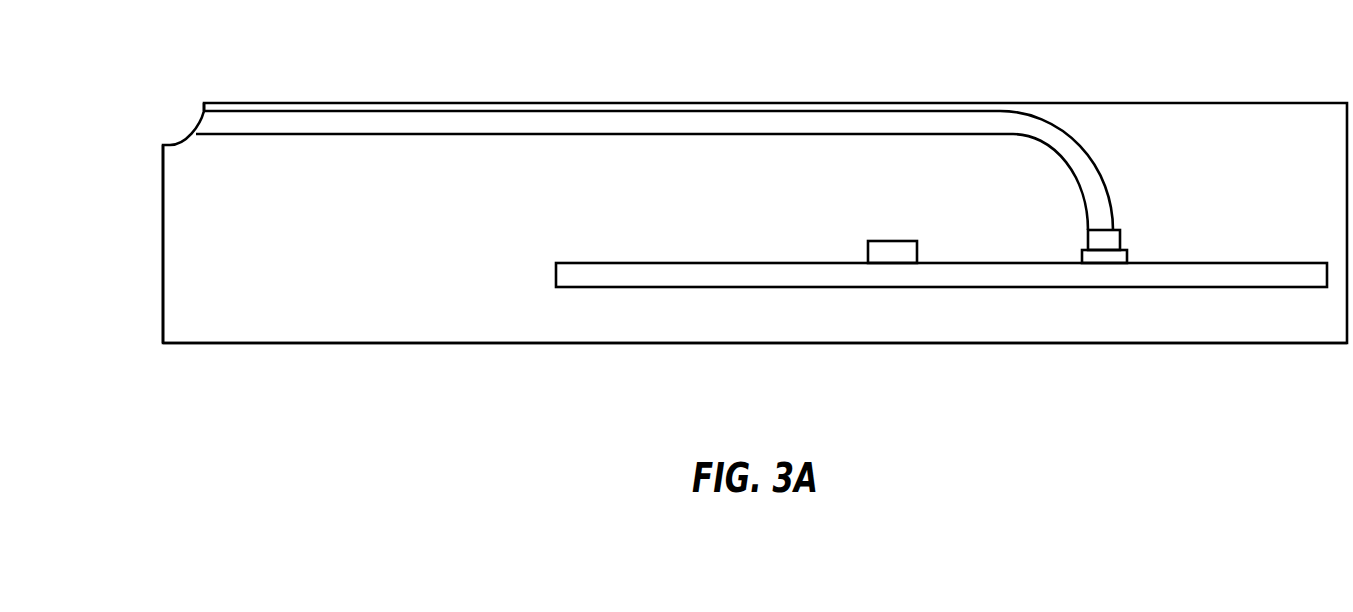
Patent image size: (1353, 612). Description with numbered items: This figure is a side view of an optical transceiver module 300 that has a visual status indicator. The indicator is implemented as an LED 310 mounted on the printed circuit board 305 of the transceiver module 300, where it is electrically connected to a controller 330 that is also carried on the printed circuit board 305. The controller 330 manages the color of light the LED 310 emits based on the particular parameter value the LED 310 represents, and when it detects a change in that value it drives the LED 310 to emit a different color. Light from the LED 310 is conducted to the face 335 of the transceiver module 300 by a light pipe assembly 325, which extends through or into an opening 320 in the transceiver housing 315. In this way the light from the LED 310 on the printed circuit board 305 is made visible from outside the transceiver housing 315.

The optical transceiver module 300 is at (1090, 96).
The printed circuit board 305 is at (977, 296).
The LED 310 is at (1135, 235).
The transceiver housing 315 is at (331, 349).
The opening 320 is at (208, 121).
The light pipe assembly 325 is at (482, 105).
The controller 330 is at (893, 237).
The face 335 is at (163, 253).